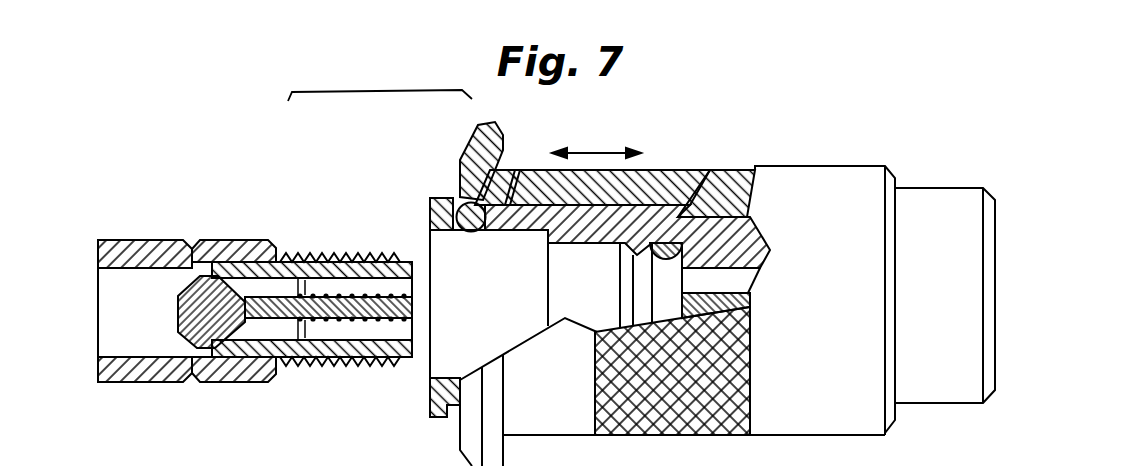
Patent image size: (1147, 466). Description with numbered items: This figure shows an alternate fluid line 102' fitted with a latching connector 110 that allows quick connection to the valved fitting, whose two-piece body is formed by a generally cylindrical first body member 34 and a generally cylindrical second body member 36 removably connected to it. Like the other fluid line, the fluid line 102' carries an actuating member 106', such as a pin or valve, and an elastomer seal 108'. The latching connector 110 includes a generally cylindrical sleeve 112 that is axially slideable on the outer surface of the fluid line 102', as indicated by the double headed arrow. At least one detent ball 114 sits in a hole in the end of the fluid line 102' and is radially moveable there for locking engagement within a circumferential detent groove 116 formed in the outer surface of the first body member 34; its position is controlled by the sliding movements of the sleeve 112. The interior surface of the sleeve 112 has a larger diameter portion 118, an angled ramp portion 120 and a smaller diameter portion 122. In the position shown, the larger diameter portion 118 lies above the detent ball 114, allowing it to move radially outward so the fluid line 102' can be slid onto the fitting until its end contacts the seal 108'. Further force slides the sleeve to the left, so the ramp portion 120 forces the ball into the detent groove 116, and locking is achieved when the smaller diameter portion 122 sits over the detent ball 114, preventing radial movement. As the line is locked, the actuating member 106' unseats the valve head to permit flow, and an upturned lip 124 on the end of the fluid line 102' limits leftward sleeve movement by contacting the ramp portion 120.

The first body member 34 is at (150, 393).
The second body member 36 is at (331, 248).
The fluid line 102' is at (1007, 295).
The actuating member 106' is at (764, 218).
The elastomer seal 108' is at (715, 186).
The latching connector 110 is at (840, 205).
The sleeve 112 is at (650, 170).
The detent ball 114 is at (458, 203).
The detent groove 116 is at (205, 240).
The larger diameter portion 118 is at (459, 187).
The angled ramp portion 120 is at (504, 152).
The smaller diameter portion 122 is at (530, 228).
The upturned lip 124 is at (430, 396).